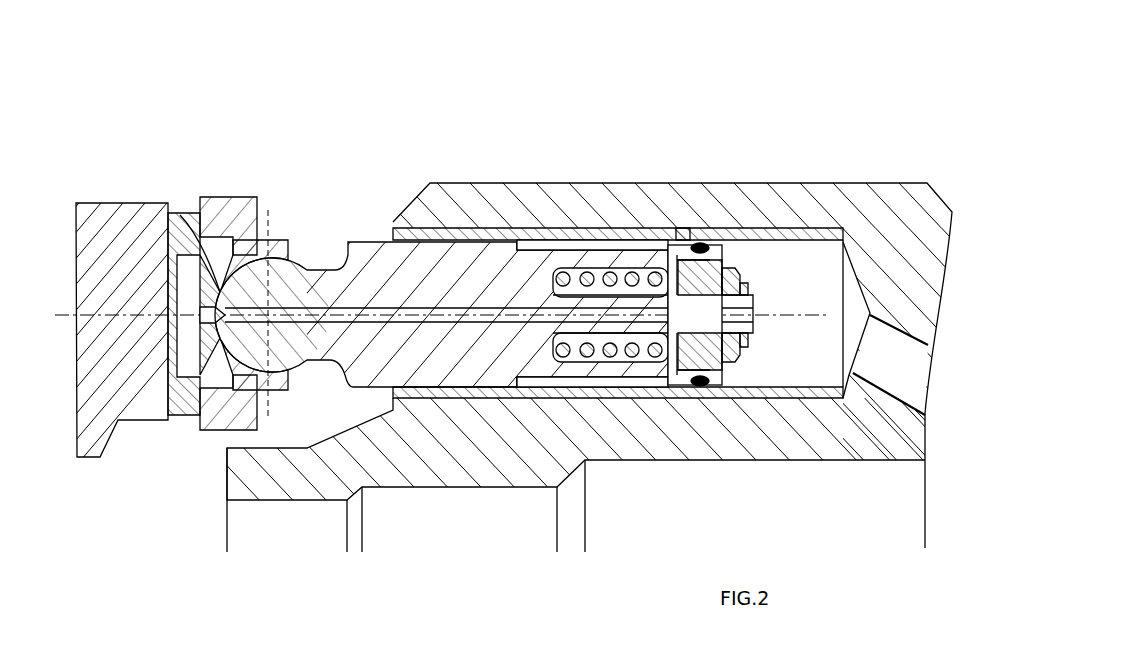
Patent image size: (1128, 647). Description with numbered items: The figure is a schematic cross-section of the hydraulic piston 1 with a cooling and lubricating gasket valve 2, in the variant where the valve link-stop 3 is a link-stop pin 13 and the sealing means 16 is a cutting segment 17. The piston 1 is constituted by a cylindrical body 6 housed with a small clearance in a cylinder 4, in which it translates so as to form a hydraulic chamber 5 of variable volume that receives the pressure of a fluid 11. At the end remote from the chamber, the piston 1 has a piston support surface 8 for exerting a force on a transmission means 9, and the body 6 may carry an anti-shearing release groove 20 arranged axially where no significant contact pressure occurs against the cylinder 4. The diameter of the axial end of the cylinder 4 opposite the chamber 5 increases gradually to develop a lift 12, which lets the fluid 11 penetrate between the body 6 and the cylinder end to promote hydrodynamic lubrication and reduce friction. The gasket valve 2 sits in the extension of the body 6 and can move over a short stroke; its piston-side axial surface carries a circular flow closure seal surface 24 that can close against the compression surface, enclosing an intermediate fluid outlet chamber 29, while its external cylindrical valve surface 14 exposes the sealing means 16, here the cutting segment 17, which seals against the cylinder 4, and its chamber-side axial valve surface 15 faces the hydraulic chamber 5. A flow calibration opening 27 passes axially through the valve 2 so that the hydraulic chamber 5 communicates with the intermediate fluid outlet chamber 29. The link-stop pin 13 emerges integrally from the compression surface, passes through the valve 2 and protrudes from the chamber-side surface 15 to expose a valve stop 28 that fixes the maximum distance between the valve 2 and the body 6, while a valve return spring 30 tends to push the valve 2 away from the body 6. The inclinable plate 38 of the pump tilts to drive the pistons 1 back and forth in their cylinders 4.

The hydraulic piston 1 is at (370, 236).
The cooling and lubricating gasket valve 2 is at (731, 255).
The valve link-stop 3 is at (645, 300).
The cylinder 4 is at (802, 243).
The hydraulic chamber 5 is at (780, 267).
The cylindrical body 6 is at (443, 262).
The piston support surface 8 is at (178, 250).
The transmission means 9 is at (185, 408).
The fluid 11 is at (792, 353).
The lift 12 is at (333, 260).
The link-stop pin 13 is at (769, 232).
The external cylindrical valve surface 14 is at (682, 234).
The chamber-side axial valve surface 15 is at (745, 375).
The sealing means 16 is at (700, 234).
The cutting segment 17 is at (702, 387).
The anti-shearing release groove 20 is at (560, 243).
The circular flow closure seal surface 24 is at (668, 247).
The flow calibration opening 27 is at (757, 297).
The valve stop 28 is at (730, 370).
The intermediate fluid outlet chamber 29 is at (660, 380).
The valve return spring 30 is at (583, 337).
The inclinable plate 38 is at (117, 215).